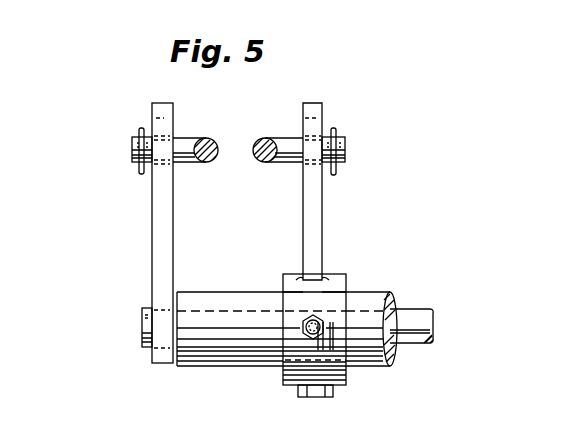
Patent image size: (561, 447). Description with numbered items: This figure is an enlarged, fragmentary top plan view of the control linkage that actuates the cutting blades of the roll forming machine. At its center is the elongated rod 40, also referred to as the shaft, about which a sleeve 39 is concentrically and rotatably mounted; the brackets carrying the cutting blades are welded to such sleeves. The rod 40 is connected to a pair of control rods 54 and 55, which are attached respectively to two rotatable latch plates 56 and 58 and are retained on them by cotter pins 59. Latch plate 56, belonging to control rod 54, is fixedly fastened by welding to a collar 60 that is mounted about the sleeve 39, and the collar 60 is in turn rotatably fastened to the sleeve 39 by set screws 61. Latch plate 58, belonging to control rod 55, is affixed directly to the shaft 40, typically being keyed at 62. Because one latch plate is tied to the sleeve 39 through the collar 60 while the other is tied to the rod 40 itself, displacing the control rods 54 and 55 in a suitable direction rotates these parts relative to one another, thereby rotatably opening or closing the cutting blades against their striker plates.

The sleeve 39 is at (393, 293).
The elongated rod 40 is at (435, 322).
The control rod 54 is at (260, 161).
The control rod 55 is at (210, 162).
The latch plate 56 is at (316, 103).
The latch plate 58 is at (161, 110).
The cotter pin 59 is at (140, 131).
The collar 60 is at (346, 274).
The set screw 61 is at (300, 324).
The key 62 is at (147, 307).